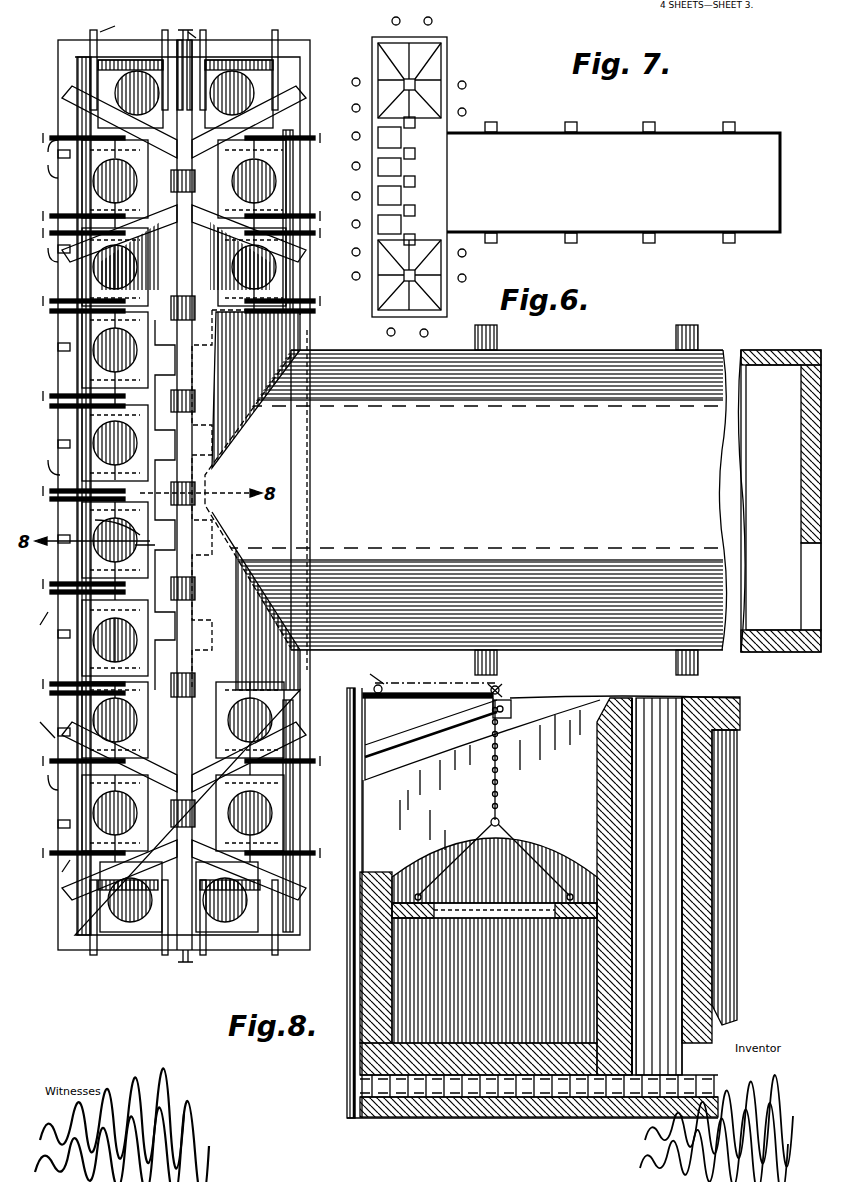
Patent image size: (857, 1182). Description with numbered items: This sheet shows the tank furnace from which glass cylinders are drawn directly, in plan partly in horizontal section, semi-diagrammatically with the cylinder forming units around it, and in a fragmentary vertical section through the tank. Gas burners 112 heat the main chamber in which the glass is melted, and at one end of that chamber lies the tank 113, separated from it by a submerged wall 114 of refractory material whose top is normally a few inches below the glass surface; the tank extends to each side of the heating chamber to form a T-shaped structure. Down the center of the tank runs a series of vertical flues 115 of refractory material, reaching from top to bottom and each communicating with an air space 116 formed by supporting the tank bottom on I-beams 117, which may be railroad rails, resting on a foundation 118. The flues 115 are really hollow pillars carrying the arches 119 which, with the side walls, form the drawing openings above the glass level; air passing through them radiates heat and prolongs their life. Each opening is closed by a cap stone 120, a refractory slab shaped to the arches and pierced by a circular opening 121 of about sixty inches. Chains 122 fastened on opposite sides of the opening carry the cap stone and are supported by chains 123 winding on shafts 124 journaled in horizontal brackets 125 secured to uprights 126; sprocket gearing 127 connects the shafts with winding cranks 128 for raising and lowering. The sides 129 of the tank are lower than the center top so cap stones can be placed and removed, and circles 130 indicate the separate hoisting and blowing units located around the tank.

In FIG. 7, the burners 112 is at (645, 122).
In FIG. 6, the burners 112 is at (676, 338).
In FIG. 8, the tank 113 is at (748, 975).
In FIG. 6, the submerged wall 114 is at (312, 472).
In FIG. 7, the vertical flues 115 is at (416, 211).
In FIG. 6, the vertical flues 115 is at (197, 390).
In FIG. 8, the vertical flues 115 is at (639, 886).
In FIG. 8, the air space 116 is at (405, 1105).
In FIG. 8, the I-beams 117 is at (362, 1088).
In FIG. 8, the foundation 118 is at (445, 1105).
In FIG. 7, the arches 119 is at (405, 54).
In FIG. 6, the arches 119 is at (165, 240).
In FIG. 8, the arches 119 is at (748, 800).
In FIG. 6, the cap stone 120 is at (222, 958).
In FIG. 8, the cap stone 120 is at (395, 875).
In FIG. 6, the opening 121 is at (92, 180).
In FIG. 8, the opening 121 is at (512, 908).
In FIG. 6, the chains 122 is at (125, 530).
In FIG. 8, the chains 122 is at (497, 822).
In FIG. 8, the chains 123 is at (499, 750).
In FIG. 8, the shafts 124 is at (503, 692).
In FIG. 6, the horizontal brackets 125 is at (275, 62).
In FIG. 8, the horizontal brackets 125 is at (430, 725).
In FIG. 6, the uprights 126 is at (95, 38).
In FIG. 8, the uprights 126 is at (350, 962).
In FIG. 6, the sprocket gearing 127 is at (100, 100).
In FIG. 8, the sprocket gearing 127 is at (385, 688).
In FIG. 6, the winding cranks 128 is at (196, 38).
In FIG. 8, the winding cranks 128 is at (368, 676).
In FIG. 6, the sides of the tank 129 is at (58, 872).
In FIG. 8, the sides of the tank 129 is at (360, 997).
In FIG. 7, the circles 130 is at (354, 280).